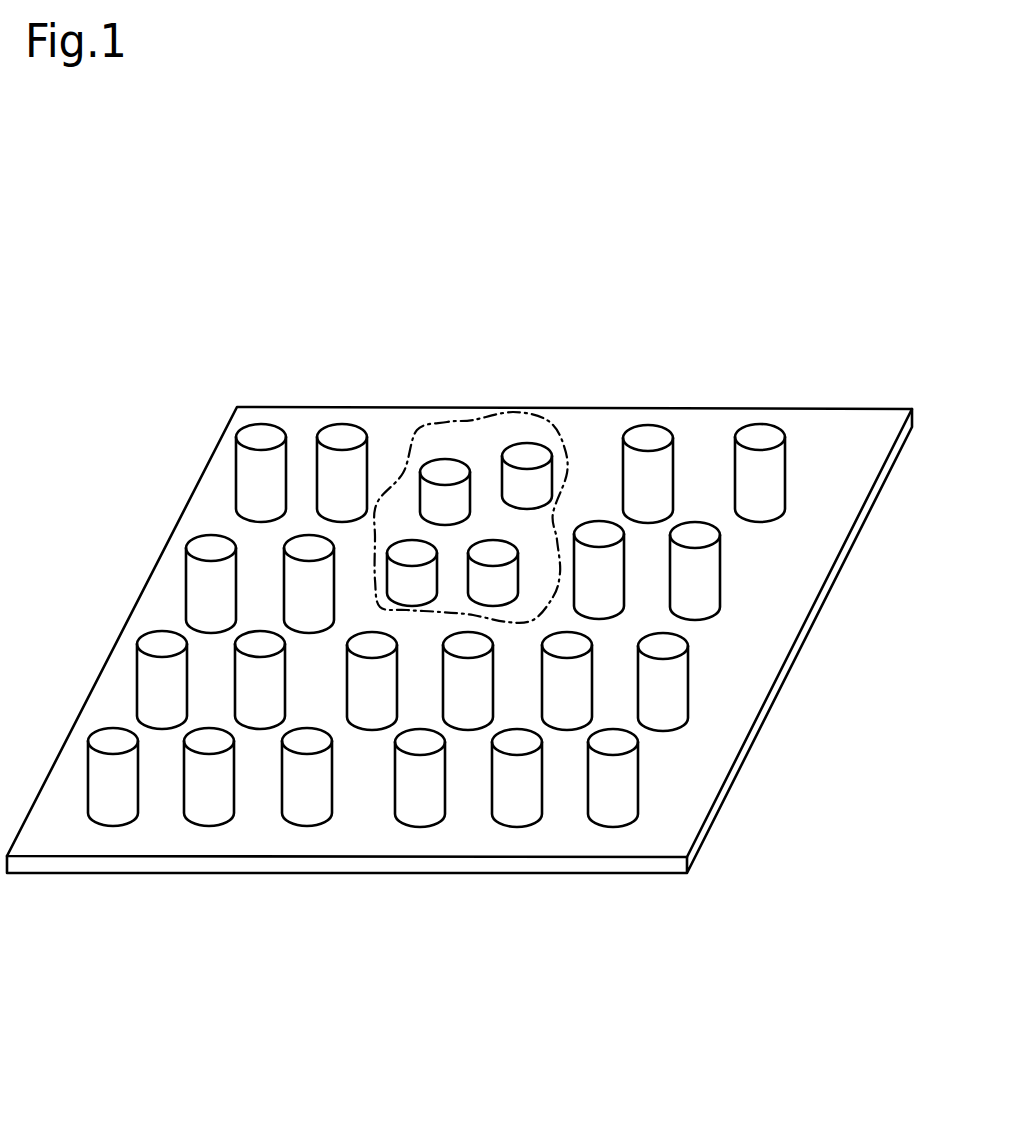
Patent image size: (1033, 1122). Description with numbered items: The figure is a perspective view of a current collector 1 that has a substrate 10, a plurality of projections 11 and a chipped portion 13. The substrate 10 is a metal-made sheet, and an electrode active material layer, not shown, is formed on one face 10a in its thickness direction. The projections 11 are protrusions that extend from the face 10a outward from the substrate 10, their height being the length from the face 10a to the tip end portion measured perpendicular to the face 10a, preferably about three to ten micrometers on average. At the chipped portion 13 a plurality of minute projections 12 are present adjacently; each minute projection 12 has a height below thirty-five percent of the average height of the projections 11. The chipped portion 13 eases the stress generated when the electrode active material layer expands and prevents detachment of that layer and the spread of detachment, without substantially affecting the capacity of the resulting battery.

The current collector 1 is at (218, 157).
The substrate 10 is at (416, 876).
The face 10a is at (473, 845).
The projections 11 is at (252, 470).
The minute projections 12 is at (527, 456).
The chipped portion 13 is at (447, 422).